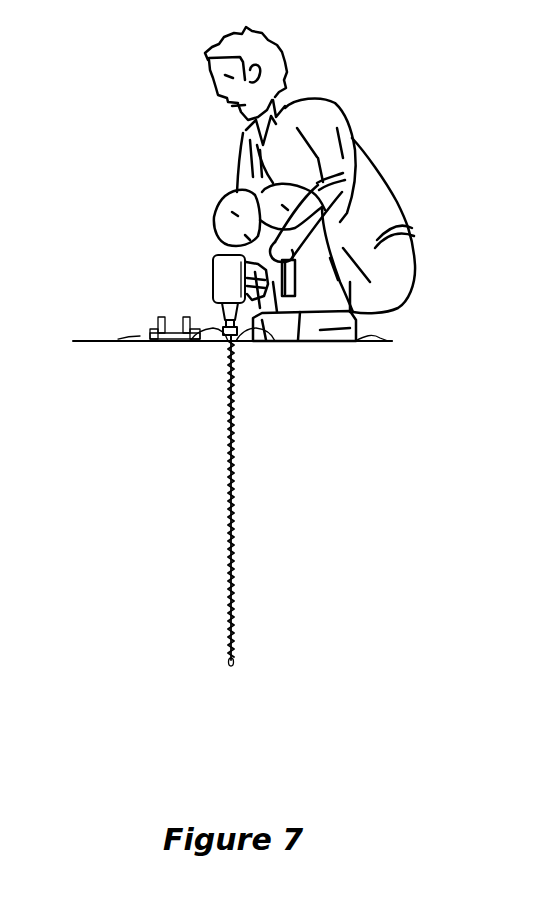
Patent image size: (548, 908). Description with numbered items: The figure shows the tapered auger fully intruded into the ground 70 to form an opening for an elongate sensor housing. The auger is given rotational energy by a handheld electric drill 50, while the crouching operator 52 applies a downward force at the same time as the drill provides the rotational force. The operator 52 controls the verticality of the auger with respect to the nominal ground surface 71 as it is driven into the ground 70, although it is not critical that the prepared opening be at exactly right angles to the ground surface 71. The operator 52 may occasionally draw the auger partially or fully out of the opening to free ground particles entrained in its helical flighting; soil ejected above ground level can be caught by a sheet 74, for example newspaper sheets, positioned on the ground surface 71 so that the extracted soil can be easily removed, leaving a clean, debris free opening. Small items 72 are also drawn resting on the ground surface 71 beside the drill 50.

The handheld electric drill 50 is at (222, 272).
The operator 52 is at (355, 138).
The ground 70 is at (187, 516).
The ground surface 71 is at (91, 341).
The anchor assembly 72 is at (237, 338).
The sheet 74 is at (378, 339).